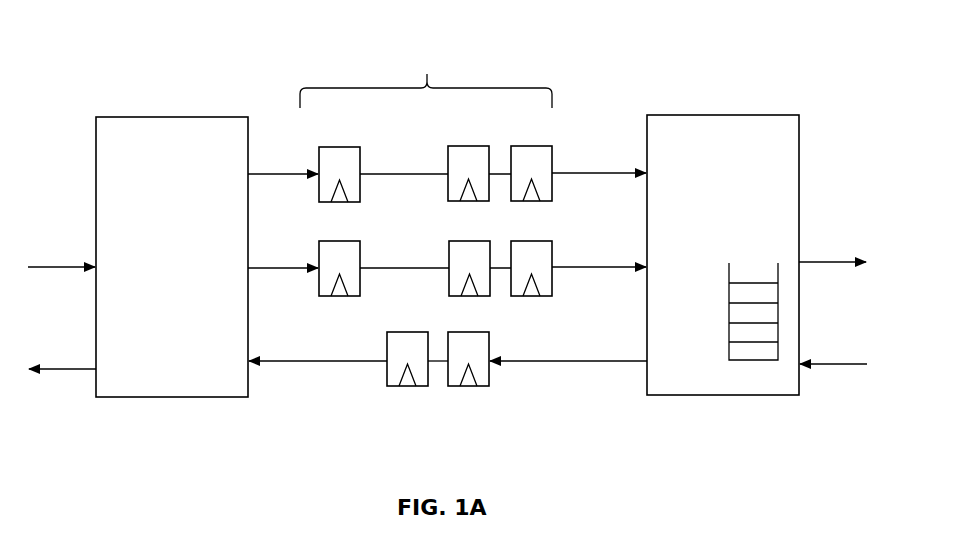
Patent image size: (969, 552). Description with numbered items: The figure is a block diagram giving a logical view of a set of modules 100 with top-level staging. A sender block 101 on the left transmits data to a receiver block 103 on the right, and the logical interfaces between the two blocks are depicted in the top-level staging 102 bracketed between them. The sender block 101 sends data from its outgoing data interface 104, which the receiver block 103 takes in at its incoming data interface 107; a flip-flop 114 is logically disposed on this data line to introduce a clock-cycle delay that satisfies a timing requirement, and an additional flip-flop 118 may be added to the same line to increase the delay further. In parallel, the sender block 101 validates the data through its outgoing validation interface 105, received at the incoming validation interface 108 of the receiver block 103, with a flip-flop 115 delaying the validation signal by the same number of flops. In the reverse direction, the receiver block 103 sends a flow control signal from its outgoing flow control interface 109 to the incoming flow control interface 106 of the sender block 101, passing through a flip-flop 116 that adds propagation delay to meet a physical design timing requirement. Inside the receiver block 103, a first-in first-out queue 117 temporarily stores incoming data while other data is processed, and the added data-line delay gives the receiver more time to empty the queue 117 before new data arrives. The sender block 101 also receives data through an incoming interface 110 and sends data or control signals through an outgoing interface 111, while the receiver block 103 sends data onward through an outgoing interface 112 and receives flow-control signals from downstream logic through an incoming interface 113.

The set of modules 100 is at (770, 60).
The sender block 101 is at (228, 115).
The top-level staging 102 is at (426, 72).
The receiver block 103 is at (684, 114).
The outgoing data interface 104 is at (291, 172).
The outgoing validation interface 105 is at (298, 266).
The incoming flow control interface 106 is at (305, 359).
The incoming data interface 107 is at (604, 171).
The incoming validation interface 108 is at (603, 265).
The outgoing flow control interface 109 is at (604, 358).
The incoming interface 110 is at (58, 265).
The outgoing interface 111 is at (68, 367).
The outgoing interface 112 is at (841, 260).
The incoming interface 113 is at (841, 362).
The flip-flop 114 is at (526, 146).
The flip-flop 115 is at (465, 249).
The flip-flop 116 is at (416, 331).
The queue 117 is at (729, 347).
The flip-flop 118 is at (475, 146).